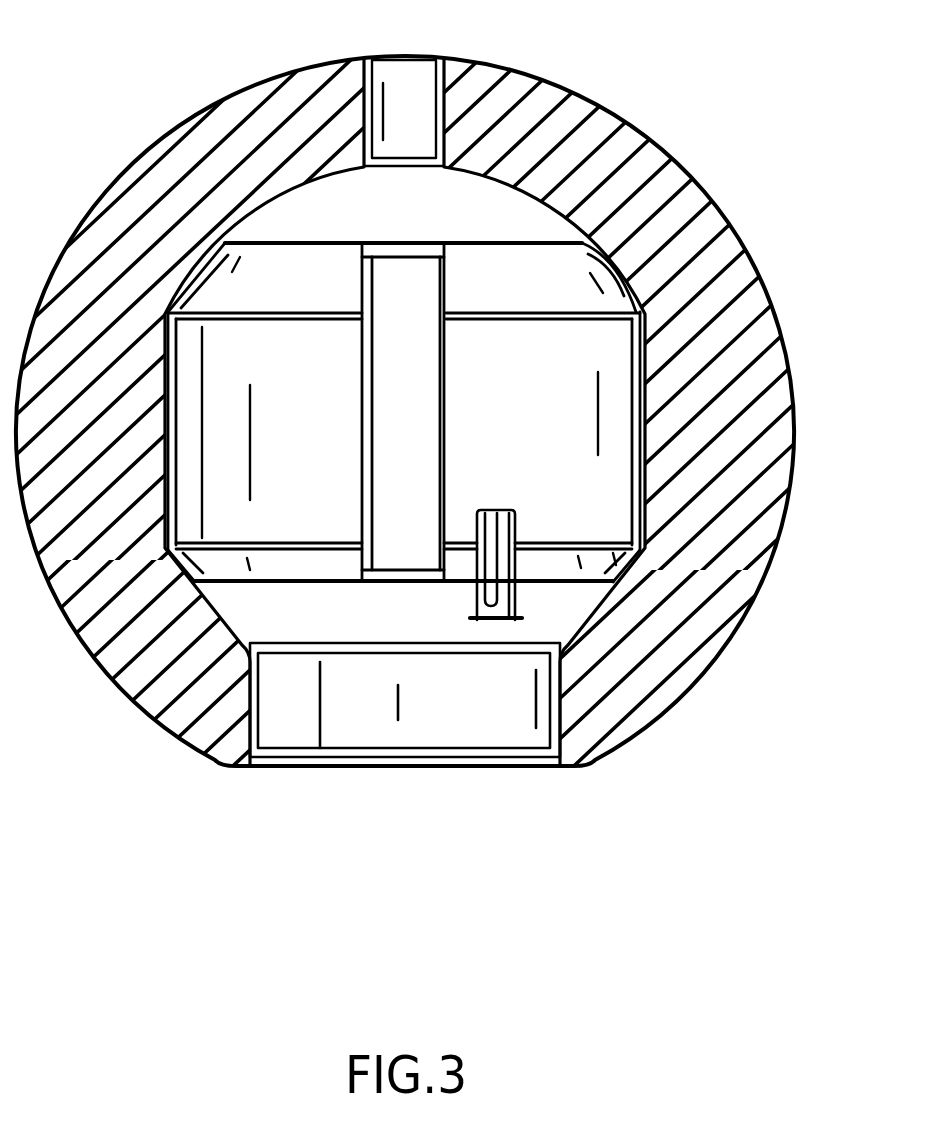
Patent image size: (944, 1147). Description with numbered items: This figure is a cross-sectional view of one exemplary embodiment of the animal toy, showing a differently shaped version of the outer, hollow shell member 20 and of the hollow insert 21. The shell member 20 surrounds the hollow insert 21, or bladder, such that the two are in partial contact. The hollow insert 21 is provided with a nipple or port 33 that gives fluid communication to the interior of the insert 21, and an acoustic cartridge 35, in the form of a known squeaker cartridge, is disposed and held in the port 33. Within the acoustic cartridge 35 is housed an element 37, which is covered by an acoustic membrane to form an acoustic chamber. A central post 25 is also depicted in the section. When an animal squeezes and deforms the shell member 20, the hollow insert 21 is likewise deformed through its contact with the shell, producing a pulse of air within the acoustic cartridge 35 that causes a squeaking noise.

The outer hollow shell member 20 is at (607, 133).
The hollow insert 21 is at (580, 268).
The central post 25 is at (445, 347).
The port 33 is at (470, 598).
The acoustic cartridge 35 is at (490, 531).
The element 37 is at (492, 515).